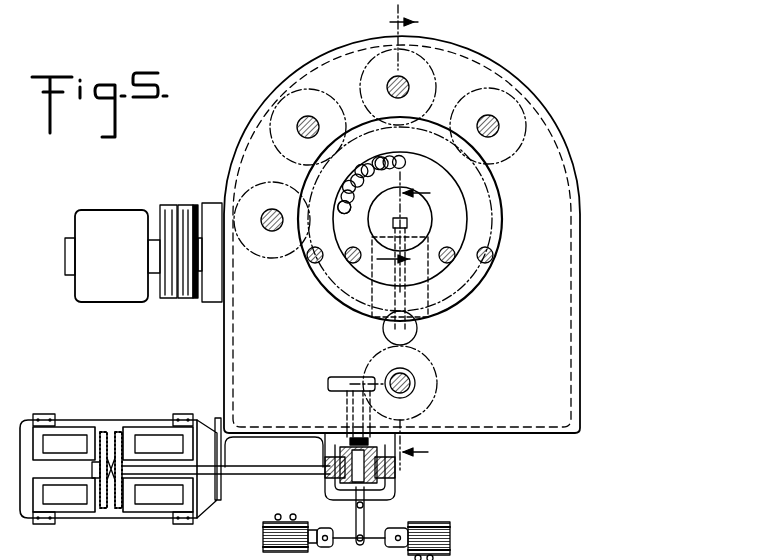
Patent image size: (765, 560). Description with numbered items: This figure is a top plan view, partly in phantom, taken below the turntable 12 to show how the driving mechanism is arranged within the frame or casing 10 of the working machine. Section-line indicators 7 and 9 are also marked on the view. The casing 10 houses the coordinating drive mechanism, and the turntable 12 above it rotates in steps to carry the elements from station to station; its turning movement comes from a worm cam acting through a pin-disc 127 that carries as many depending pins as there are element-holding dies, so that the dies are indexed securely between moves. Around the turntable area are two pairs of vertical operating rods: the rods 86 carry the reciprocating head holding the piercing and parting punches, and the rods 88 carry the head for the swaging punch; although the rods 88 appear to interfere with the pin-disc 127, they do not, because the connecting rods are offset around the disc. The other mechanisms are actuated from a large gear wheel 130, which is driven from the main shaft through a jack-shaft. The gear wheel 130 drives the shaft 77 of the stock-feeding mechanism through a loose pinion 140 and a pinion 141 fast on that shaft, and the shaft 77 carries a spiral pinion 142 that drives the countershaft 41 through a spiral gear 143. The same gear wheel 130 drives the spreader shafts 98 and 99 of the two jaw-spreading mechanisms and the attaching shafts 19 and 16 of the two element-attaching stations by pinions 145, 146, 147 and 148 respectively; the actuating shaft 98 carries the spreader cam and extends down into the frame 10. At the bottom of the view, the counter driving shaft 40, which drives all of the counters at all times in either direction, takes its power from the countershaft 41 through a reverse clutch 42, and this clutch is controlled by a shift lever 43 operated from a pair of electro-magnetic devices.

The section line 7- 7 is at (405, 330).
The section line 9- 9 is at (406, 138).
The frame or casing 10 is at (582, 284).
The turntable 12 is at (413, 214).
The shaft 16 is at (497, 122).
The shaft 19 is at (407, 82).
The counter driving shaft 40 is at (250, 488).
The countershaft 41 is at (347, 409).
The reverse clutch 42 is at (382, 437).
The shift lever 43 is at (362, 517).
The shaft of the stock-feeding mechanism 77 is at (410, 382).
The vertical operating rods 86 is at (307, 263).
The vertical operating rods 88 is at (350, 262).
The actuating shaft 98 is at (265, 229).
The shaft 99 is at (297, 127).
The pin-disc 127 is at (460, 199).
The large gear wheel 130 is at (486, 185).
The loose pinion 140 is at (417, 333).
The pinion 141 is at (430, 362).
The spiral pinion 142 is at (412, 397).
The spiral gear 143 is at (330, 380).
The pinion 145 is at (247, 185).
The pinion 146 is at (272, 113).
The pinion 147 is at (357, 75).
The pinion 148 is at (495, 86).